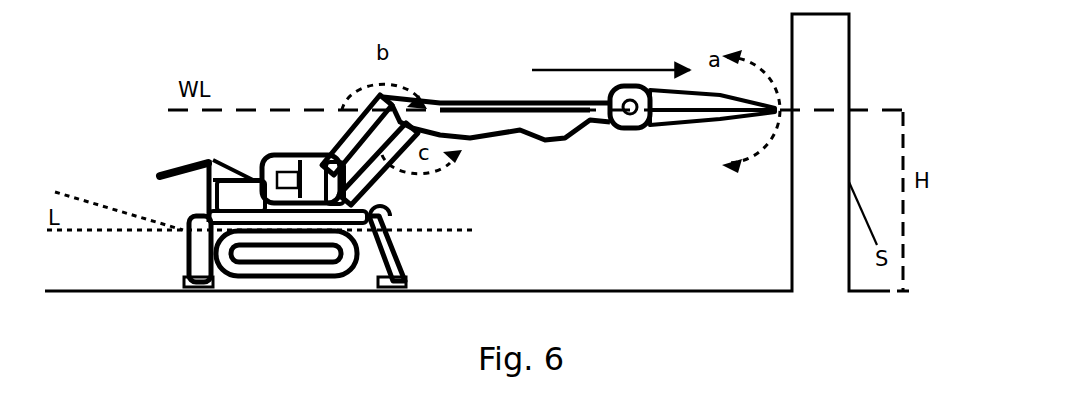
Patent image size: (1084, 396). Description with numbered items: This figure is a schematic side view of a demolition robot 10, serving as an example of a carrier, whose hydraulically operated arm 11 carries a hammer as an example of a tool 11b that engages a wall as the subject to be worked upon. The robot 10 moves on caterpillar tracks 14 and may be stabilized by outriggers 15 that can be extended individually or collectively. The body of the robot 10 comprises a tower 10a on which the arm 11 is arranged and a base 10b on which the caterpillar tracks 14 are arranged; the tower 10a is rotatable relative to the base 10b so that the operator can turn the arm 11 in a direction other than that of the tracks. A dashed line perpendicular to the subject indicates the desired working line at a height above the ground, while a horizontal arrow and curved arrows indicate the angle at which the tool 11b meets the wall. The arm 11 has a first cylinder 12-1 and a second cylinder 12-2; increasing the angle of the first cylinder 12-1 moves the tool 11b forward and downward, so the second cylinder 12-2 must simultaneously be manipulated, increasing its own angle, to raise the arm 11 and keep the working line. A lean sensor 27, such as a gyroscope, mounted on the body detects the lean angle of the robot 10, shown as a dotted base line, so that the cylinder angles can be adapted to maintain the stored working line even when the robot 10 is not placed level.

The robot 10 is at (188, 137).
The tower 10a is at (270, 157).
The base 10b is at (205, 202).
The arm 11 is at (453, 122).
The tool 11b is at (697, 118).
The first cylinder 12-1 is at (347, 132).
The second cylinder 12-2 is at (375, 175).
The caterpillar tracks 14 is at (258, 272).
The outriggers 15 is at (188, 237).
The lean sensor 27 is at (290, 190).